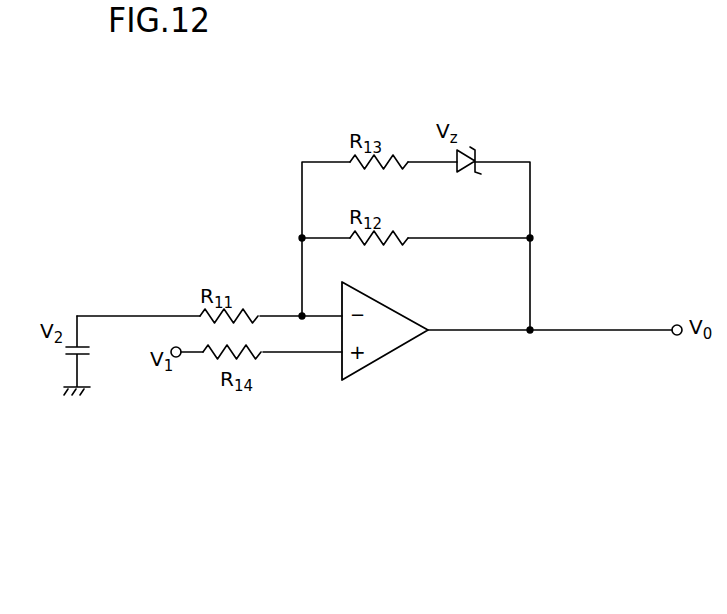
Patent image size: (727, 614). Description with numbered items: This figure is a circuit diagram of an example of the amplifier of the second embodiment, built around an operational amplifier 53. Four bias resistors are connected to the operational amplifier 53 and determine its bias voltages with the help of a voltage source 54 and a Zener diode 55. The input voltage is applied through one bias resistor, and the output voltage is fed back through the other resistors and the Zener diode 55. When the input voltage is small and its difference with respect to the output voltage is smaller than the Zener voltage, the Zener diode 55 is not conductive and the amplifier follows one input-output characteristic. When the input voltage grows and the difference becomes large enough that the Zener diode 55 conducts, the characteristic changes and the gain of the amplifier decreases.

The operational amplifier 53 is at (392, 346).
The voltage source 54 is at (68, 356).
The Zener diode 55 is at (472, 147).